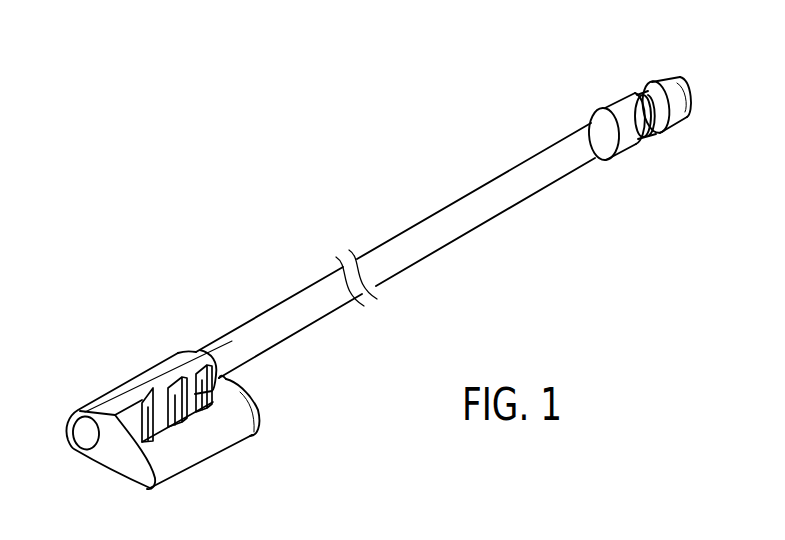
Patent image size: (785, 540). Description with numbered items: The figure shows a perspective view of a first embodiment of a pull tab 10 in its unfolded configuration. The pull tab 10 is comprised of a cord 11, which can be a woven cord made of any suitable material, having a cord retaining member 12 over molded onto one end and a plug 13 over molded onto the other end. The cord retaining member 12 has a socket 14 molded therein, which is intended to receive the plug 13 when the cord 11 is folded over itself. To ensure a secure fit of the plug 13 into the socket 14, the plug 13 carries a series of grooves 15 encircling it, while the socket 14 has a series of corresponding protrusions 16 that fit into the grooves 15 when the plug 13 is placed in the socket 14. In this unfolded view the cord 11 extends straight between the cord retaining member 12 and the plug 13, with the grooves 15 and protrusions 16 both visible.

The pull tab 10 is at (333, 200).
The cord 11 is at (455, 231).
The cord retaining member 12 is at (205, 442).
The plug 13 is at (641, 140).
The socket 14 is at (188, 404).
The grooves 15 is at (642, 93).
The protrusions 16 is at (147, 394).